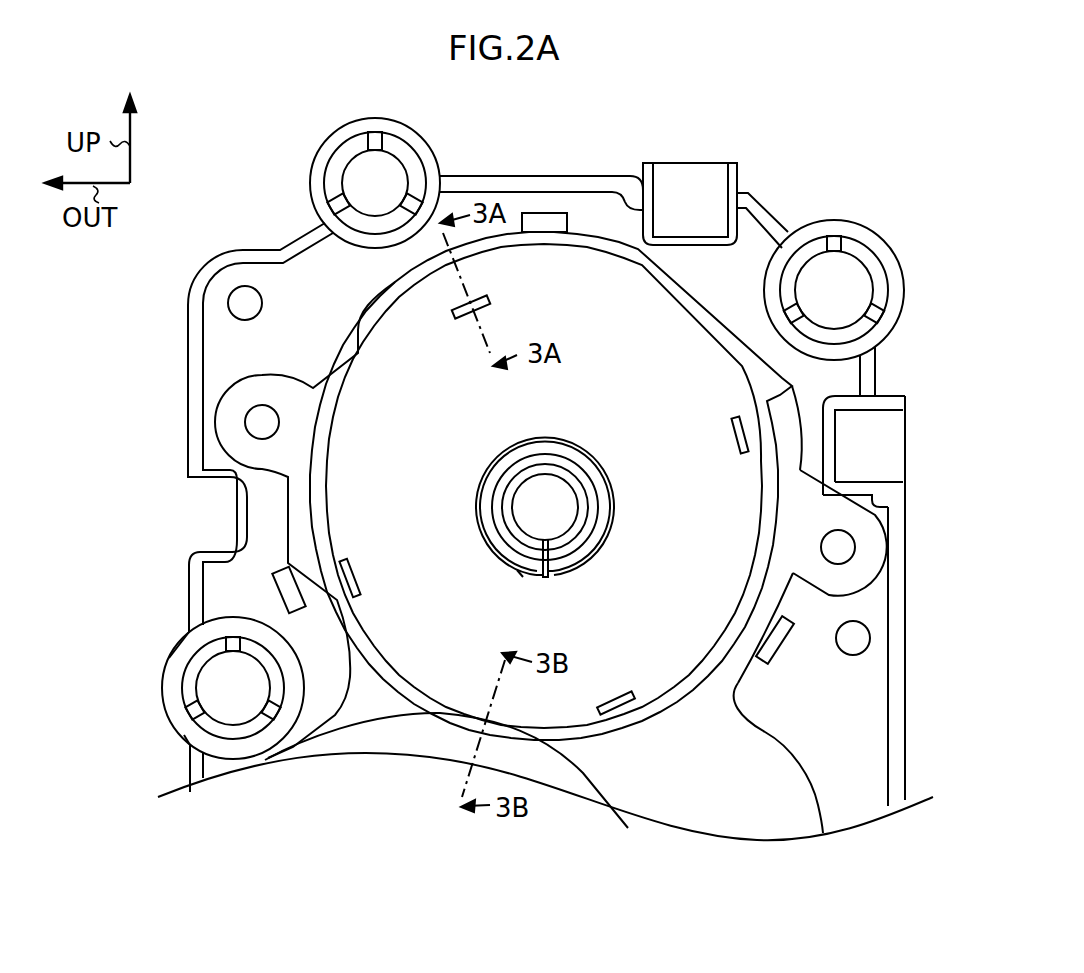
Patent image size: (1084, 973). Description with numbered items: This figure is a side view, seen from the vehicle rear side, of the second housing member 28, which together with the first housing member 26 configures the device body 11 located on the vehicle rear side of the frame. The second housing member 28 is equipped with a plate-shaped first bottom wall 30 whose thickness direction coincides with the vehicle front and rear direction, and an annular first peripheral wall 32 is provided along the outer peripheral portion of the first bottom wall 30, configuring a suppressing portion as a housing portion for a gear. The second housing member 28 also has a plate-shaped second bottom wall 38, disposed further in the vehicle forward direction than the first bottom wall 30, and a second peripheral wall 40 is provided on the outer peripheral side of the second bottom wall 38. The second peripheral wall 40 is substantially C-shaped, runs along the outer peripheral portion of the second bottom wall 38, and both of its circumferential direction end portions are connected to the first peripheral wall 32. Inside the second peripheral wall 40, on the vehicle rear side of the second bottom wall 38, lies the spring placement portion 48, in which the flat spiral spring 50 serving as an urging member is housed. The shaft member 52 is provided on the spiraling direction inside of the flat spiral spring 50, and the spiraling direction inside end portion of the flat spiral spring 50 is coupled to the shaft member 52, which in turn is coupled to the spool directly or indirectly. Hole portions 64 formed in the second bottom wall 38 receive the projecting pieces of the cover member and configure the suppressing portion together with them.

The device body 11 is at (803, 215).
The first housing member 26 is at (907, 559).
The second housing member 28 is at (803, 757).
The first bottom wall 30 is at (610, 816).
The first peripheral wall 32 is at (583, 774).
The second bottom wall 38 is at (667, 653).
The second peripheral wall 40 is at (653, 713).
The spring placement portion 48 is at (382, 332).
The flat spiral spring 50 is at (475, 511).
The shaft member 52 is at (598, 495).
The hole portions 64 is at (470, 310).